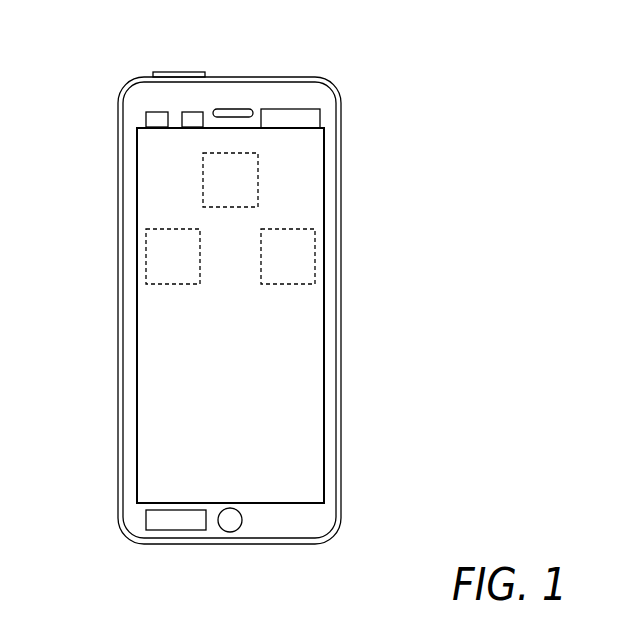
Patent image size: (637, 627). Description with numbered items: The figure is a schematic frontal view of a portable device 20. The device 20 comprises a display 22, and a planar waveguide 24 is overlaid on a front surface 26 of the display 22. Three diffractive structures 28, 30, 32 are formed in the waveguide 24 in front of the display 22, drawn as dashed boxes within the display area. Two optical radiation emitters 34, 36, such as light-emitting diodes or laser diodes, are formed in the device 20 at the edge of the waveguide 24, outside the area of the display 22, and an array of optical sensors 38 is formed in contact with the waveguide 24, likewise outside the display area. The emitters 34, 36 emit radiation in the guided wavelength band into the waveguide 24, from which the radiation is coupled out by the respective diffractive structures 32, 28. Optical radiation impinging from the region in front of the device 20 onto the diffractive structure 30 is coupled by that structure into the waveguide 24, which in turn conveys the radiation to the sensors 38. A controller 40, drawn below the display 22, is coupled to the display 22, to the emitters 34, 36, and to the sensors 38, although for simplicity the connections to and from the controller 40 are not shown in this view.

The portable device 20 is at (505, 170).
The display 22 is at (324, 175).
The planar waveguide 24 is at (155, 363).
The front surface 26 is at (155, 420).
The diffractive structure 28 is at (218, 192).
The diffractive structure 30 is at (275, 269).
The diffractive structure 32 is at (159, 269).
The optical radiation emitter 34 is at (152, 112).
The optical radiation emitter 36 is at (207, 112).
The array of optical sensors 38 is at (287, 109).
The controller 40 is at (172, 530).